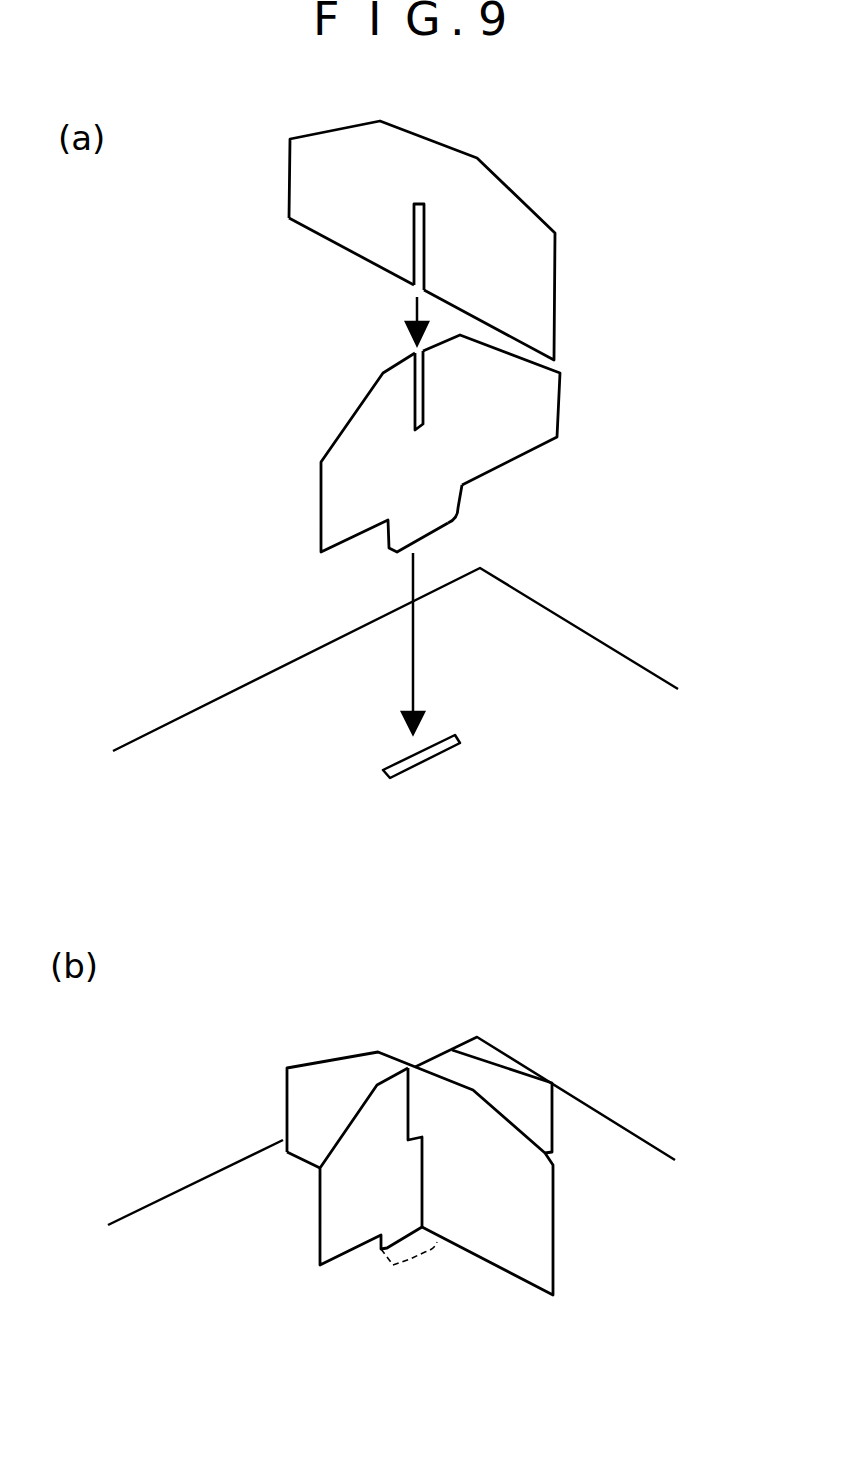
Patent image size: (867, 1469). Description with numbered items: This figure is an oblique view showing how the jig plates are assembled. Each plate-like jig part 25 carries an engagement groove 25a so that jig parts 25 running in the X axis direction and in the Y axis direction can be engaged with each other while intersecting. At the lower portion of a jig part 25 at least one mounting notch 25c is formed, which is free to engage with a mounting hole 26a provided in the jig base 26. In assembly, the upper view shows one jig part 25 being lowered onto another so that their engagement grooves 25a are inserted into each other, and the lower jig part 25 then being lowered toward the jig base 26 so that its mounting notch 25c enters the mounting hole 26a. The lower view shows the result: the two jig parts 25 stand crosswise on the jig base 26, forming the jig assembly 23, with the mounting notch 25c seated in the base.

The jig assembly 23 is at (404, 1047).
The jig parts 25 is at (543, 271).
The engagement groove 25a is at (417, 242).
The mounting notch 25c is at (448, 505).
The jig base 26 is at (620, 668).
The mounting hole 26a is at (423, 762).